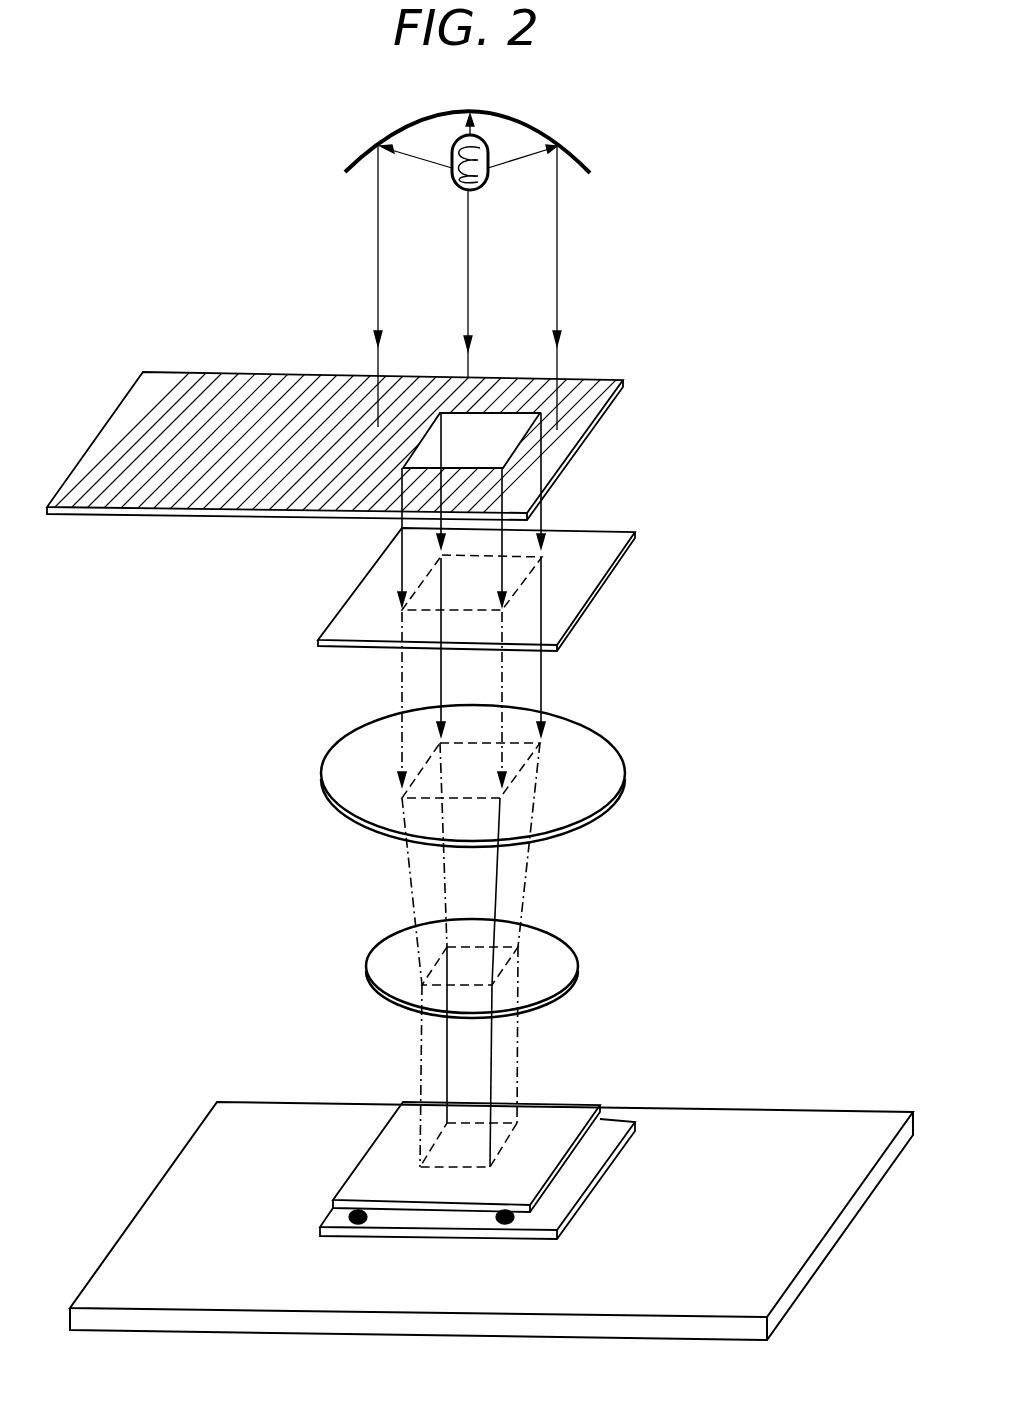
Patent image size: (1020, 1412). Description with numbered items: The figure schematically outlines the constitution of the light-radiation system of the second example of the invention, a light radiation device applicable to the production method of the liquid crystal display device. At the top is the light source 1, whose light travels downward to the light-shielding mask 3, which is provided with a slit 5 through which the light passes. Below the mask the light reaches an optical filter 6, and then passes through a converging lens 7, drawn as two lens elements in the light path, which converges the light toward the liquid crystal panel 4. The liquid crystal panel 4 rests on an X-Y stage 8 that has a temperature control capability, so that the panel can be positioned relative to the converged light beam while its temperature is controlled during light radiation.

The light source 1 is at (584, 164).
The light-shielding mask 3 is at (585, 437).
The slit 5 is at (488, 428).
The optical filter 6 is at (600, 590).
The converging lens 7 is at (620, 795).
The liquid crystal panel 4 is at (652, 1092).
The X-Y stage with a temperature control capability 8 is at (815, 1213).